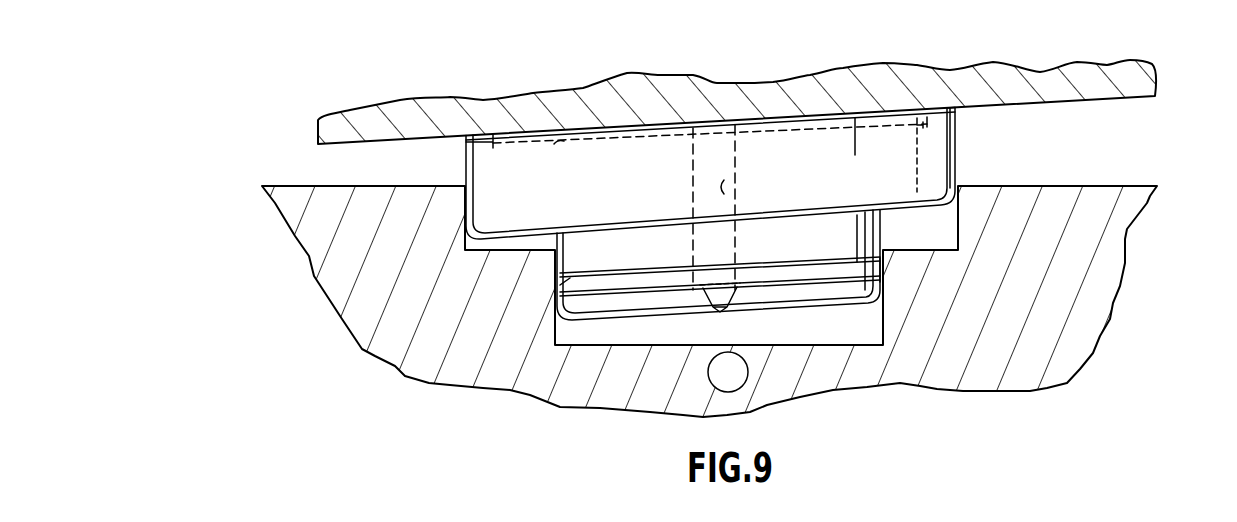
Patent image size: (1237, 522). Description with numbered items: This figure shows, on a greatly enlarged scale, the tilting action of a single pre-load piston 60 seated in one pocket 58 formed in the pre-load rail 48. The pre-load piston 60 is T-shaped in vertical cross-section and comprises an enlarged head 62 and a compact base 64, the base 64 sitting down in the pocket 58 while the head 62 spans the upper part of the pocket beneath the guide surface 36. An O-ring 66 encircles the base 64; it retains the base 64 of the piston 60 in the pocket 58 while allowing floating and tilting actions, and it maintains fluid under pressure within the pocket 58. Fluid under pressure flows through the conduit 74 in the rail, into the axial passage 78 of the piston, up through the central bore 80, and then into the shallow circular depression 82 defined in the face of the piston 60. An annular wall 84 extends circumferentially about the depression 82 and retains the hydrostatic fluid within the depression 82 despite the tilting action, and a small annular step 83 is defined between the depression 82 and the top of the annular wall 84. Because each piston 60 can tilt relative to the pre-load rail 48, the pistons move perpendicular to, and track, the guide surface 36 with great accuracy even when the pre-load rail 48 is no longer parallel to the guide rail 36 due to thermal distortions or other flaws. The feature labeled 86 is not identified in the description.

The guide surface 36 is at (1060, 80).
The pre-load rail 48 is at (1092, 290).
The pocket 58 is at (873, 342).
The pre-load piston 60 is at (884, 110).
The enlarged head 62 is at (933, 182).
The compact base 64 is at (853, 240).
The O-ring 66 is at (563, 295).
The conduit 74 is at (728, 377).
The axial passage 78 is at (733, 317).
The central bore 80 is at (733, 188).
The shallow circular depression 82 is at (562, 149).
The annular step 83 is at (513, 143).
The annular wall 84 is at (957, 115).
The corner 86 is at (467, 228).